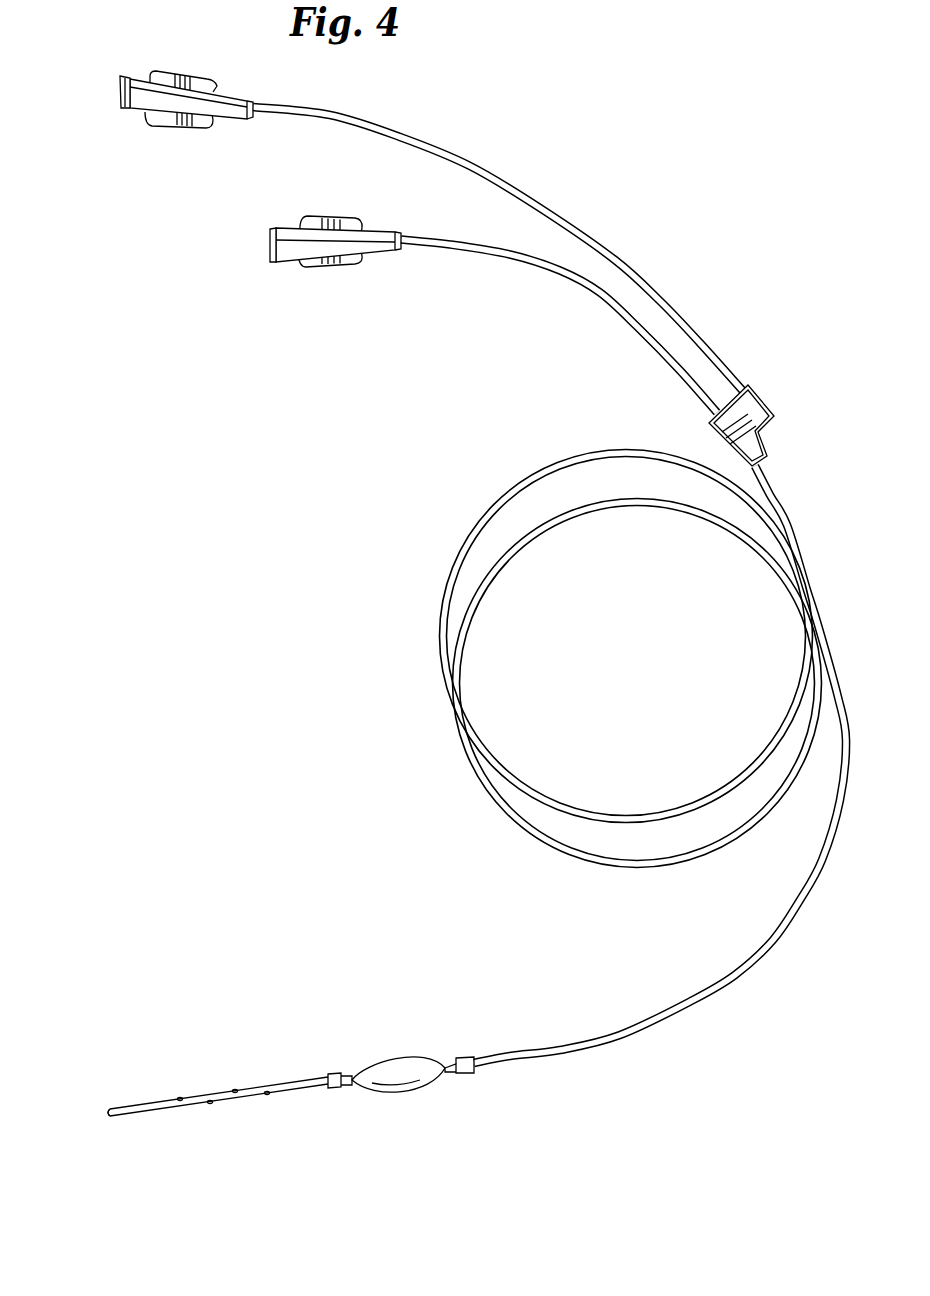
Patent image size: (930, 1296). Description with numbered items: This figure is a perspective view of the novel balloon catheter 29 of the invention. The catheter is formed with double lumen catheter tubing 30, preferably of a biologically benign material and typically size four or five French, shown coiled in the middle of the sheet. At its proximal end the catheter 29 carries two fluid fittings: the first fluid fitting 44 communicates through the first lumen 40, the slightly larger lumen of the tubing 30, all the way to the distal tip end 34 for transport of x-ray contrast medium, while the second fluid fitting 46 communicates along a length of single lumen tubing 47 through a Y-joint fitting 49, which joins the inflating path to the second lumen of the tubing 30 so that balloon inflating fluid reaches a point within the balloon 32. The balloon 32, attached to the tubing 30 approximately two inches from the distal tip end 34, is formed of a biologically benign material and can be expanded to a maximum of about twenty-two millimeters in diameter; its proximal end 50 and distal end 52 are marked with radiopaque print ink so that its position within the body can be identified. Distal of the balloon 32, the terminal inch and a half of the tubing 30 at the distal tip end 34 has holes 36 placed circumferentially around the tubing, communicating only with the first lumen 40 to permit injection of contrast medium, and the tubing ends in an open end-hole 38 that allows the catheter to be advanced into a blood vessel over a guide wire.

The balloon catheter 29 is at (313, 604).
The double lumen catheter tubing 30 is at (438, 630).
The balloon 32 is at (405, 1057).
The distal tip end 34 is at (115, 1108).
The holes 36 is at (235, 1089).
The open end-hole 38 is at (107, 1113).
The first lumen 40 is at (638, 326).
The first fluid fitting 44 is at (153, 70).
The second fluid fitting 46 is at (340, 270).
The single lumen tubing 47 is at (660, 302).
The Y-joint fitting 49 is at (772, 395).
The proximal end of the balloon 50 is at (463, 1057).
The distal end of the balloon 52 is at (334, 1073).